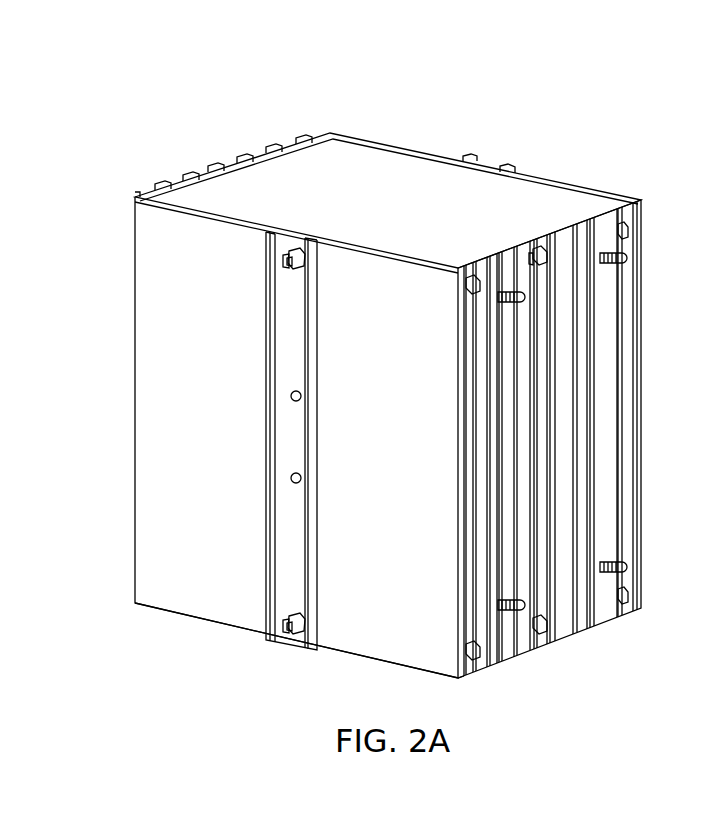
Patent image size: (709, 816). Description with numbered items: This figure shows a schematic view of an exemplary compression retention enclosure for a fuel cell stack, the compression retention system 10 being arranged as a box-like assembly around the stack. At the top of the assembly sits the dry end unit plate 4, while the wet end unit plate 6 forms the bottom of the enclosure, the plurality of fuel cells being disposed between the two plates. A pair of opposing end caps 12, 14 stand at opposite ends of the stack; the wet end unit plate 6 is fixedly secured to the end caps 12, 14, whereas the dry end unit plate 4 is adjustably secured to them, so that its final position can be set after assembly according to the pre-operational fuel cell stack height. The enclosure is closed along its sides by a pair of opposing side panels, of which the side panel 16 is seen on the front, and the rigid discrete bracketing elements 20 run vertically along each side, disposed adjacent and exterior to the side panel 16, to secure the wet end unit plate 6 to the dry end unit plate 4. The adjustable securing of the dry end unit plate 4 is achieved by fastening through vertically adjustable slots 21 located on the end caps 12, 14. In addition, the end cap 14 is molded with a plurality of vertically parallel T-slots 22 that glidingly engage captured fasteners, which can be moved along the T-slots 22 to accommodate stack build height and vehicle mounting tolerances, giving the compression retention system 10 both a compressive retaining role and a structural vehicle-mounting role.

The compression retention system 10 is at (233, 116).
The dry end unit plate 4 is at (397, 172).
The end cap 12 is at (233, 166).
The side panel 16 is at (145, 545).
The wet end unit plate 6 is at (375, 661).
The rigid discrete bracketing element 20 is at (263, 640).
The vertically adjustable slot 21 is at (537, 243).
The T-slot 22 is at (500, 374).
The end cap 14 is at (617, 453).